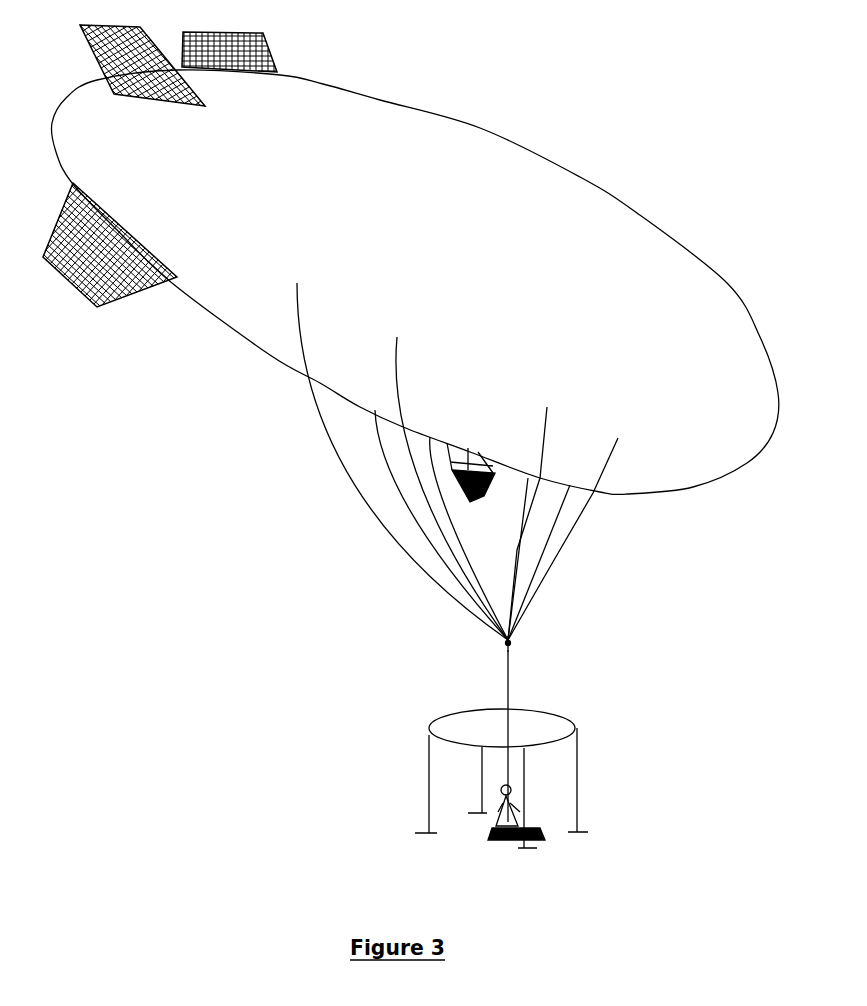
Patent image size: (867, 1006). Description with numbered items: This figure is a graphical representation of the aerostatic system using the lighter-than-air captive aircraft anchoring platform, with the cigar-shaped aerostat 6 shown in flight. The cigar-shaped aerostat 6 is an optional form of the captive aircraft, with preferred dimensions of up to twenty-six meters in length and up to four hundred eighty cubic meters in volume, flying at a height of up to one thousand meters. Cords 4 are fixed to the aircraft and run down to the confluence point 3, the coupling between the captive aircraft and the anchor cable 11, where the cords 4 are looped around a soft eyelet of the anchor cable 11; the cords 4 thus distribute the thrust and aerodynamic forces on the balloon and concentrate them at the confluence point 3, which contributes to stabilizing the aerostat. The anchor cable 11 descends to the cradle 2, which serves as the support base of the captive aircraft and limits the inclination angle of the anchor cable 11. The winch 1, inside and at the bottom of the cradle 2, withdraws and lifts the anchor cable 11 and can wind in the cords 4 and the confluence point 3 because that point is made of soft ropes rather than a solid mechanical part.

The winch 1 is at (476, 835).
The cradle 2 is at (580, 720).
The confluence point 3 is at (494, 649).
The cords 4 is at (416, 481).
The cigar-shaped aerostat 6 is at (637, 262).
The anchor cable 11 is at (519, 694).